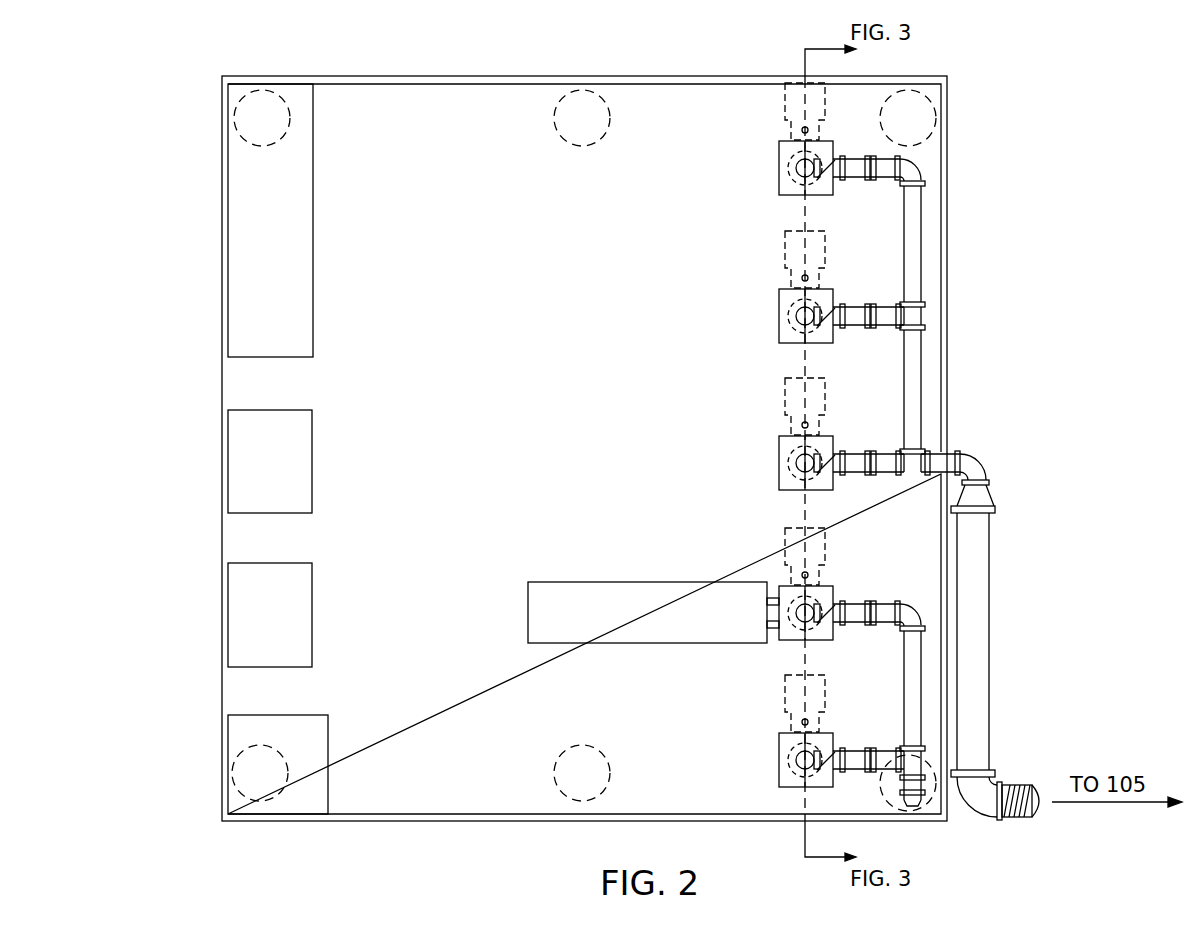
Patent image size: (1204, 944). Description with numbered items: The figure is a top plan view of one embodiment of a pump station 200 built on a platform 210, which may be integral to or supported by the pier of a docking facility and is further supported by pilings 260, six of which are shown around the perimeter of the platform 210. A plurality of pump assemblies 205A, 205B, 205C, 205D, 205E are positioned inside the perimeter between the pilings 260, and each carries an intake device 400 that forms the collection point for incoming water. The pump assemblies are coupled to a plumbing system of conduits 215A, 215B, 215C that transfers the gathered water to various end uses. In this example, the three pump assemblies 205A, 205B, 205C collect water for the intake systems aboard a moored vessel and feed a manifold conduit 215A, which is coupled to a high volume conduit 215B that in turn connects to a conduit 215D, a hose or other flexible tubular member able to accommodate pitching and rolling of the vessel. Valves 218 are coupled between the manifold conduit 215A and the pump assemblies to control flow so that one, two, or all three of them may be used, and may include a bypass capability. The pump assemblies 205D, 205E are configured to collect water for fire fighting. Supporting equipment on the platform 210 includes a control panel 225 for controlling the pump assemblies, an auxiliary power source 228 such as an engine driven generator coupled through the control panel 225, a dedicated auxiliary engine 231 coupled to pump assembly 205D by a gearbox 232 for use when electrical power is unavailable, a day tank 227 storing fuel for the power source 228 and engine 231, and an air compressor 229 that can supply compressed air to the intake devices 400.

The pump station 200 is at (1038, 95).
The platform 210 is at (612, 78).
The pilings 260 is at (238, 125).
The control panel 225 is at (250, 234).
The air compressor 229 is at (250, 450).
The auxiliary power source 228 is at (250, 607).
The day tank 227 is at (250, 739).
The auxiliary engine 231 is at (650, 624).
The gearbox 232 is at (778, 592).
The intake device 400 is at (772, 104).
The pump assembly 205A is at (779, 190).
The pump assembly 205B is at (779, 338).
The pump assembly 205C is at (779, 485).
The pump assembly 205D is at (770, 635).
The pump assembly 205E is at (779, 762).
The valves 218 is at (866, 181).
The manifold conduit 215A is at (912, 238).
The high volume conduit 215B is at (988, 576).
The conduit 215C is at (914, 692).
The conduit 215D is at (1038, 822).